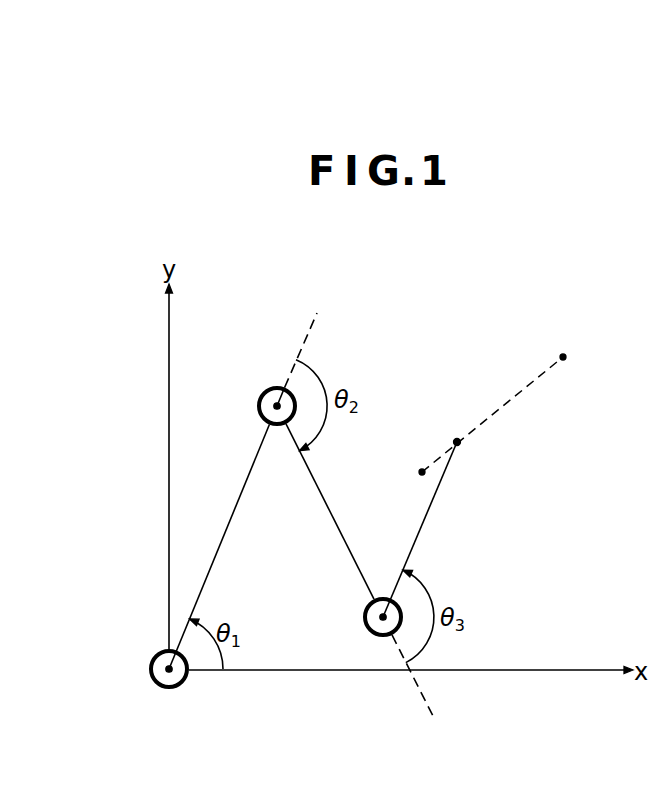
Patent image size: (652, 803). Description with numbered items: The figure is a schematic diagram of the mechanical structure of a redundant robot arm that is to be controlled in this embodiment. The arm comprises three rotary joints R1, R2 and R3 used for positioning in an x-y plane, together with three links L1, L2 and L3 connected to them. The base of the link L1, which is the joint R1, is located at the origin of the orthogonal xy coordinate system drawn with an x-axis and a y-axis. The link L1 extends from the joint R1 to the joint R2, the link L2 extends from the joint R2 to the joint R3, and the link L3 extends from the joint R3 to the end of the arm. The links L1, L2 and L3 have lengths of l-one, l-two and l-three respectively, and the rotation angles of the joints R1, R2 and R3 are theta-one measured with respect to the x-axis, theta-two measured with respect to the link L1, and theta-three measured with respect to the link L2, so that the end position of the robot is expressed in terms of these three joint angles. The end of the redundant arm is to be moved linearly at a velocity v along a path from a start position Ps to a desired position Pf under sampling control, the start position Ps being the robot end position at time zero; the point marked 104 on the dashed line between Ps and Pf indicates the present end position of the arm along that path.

The present position of the arm end point on the path from Ps to Pf 104 is at (464, 445).
The rotary joint R1 is at (149, 671).
The rotary joint R2 is at (276, 392).
The rotary joint R3 is at (365, 620).
The link L1 is at (243, 491).
The link L2 is at (360, 571).
The link L3 is at (420, 529).
The start position Ps is at (407, 486).
The desired position Pf is at (564, 350).